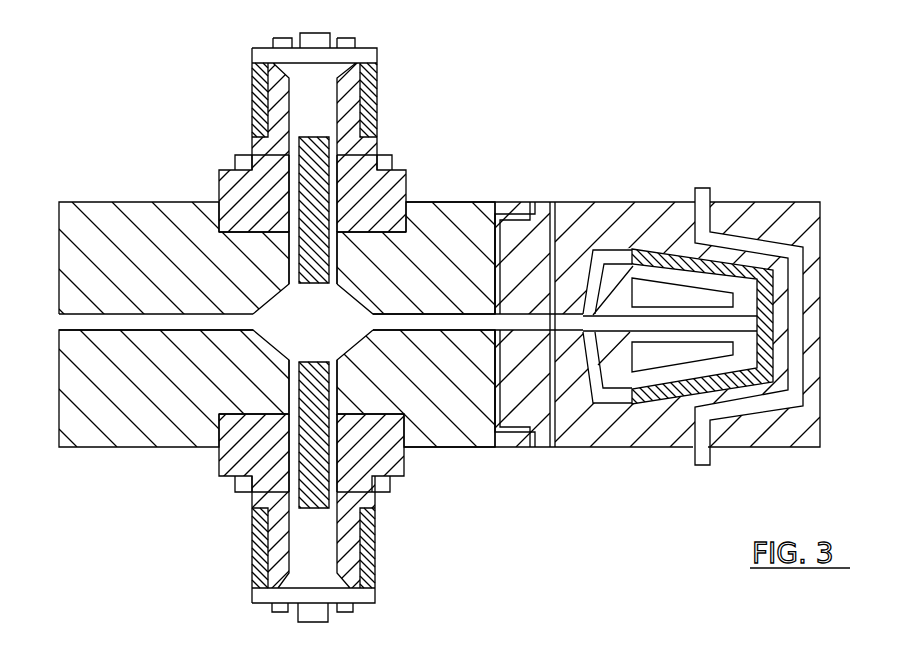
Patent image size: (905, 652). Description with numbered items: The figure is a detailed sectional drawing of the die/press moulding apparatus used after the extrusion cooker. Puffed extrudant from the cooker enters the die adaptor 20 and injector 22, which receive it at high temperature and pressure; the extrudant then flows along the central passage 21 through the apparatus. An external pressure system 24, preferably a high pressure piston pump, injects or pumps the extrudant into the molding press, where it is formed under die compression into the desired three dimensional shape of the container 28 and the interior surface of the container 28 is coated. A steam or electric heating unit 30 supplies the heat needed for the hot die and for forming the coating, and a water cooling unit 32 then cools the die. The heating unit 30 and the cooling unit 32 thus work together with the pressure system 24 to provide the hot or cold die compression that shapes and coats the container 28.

The die adaptor 20 is at (126, 432).
The gas passage 21 is at (70, 322).
The injector 22 is at (393, 156).
The external pressure system 24 is at (378, 86).
The container 28 is at (651, 250).
The steam or electric heating unit 30 is at (652, 372).
The water cooling unit 32 is at (804, 383).